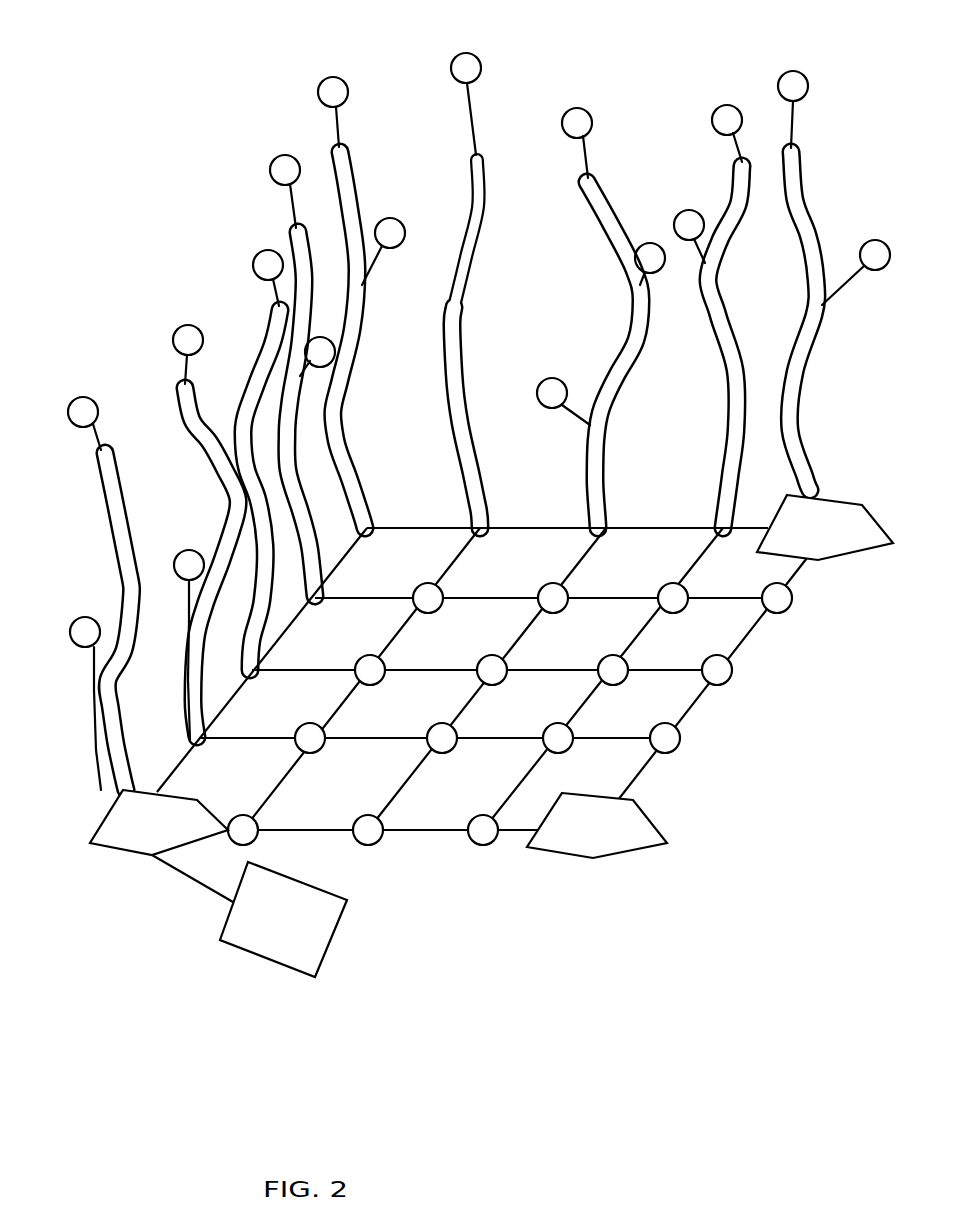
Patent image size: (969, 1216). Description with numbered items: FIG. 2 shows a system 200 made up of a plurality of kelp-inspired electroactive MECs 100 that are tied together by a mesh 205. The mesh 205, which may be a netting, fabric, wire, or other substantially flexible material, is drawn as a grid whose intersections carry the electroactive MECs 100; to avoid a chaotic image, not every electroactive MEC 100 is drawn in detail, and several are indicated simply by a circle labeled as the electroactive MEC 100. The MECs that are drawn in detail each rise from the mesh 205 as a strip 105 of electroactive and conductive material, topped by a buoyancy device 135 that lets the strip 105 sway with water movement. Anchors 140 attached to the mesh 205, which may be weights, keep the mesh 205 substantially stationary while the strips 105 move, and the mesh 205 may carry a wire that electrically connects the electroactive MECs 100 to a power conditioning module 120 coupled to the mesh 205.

The system 200 is at (190, 57).
The electroactive MEC device 100 is at (443, 610).
The strip 105 is at (305, 507).
The buoyancy device 135 is at (327, 78).
The anchor 140 is at (167, 831).
The power conditioning module 120 is at (300, 931).
The mesh 205 is at (687, 712).